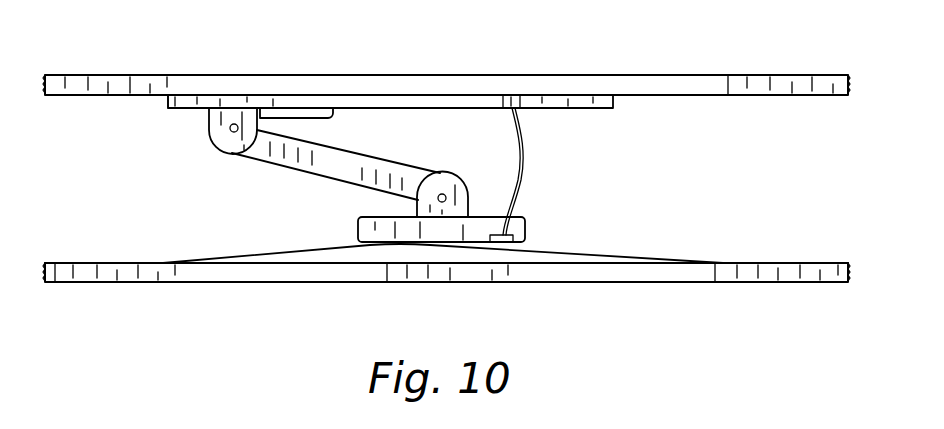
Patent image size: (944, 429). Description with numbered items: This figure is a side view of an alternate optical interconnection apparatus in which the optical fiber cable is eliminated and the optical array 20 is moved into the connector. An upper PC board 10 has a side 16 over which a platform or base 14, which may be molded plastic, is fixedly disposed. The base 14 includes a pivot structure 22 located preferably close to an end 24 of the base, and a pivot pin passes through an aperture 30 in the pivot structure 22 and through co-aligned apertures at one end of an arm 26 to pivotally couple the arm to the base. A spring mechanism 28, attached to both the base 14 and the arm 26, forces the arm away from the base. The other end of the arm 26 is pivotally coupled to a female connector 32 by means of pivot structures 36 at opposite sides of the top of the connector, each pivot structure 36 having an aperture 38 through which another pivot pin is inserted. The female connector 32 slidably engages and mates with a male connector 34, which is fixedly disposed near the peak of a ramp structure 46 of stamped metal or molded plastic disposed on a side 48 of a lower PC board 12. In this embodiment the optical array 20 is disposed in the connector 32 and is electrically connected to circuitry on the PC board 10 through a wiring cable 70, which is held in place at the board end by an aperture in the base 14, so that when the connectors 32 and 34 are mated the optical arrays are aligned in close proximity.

The PC board 10 is at (812, 75).
The PC board 12 is at (803, 282).
The base 14 is at (613, 108).
The side 16 is at (795, 95).
The optical array 20 is at (463, 225).
The pivot structure 22 is at (208, 122).
The end 24 is at (168, 97).
The arm 26 is at (298, 172).
The spring mechanism 28 is at (312, 118).
The aperture 30 is at (234, 128).
The female connector 32 is at (527, 222).
The male connector 34 is at (530, 242).
The pivot structure 36 is at (466, 180).
The aperture 38 is at (438, 198).
The ramp structure 46 is at (257, 250).
The side 48 is at (813, 263).
The wiring cable 70 is at (522, 157).